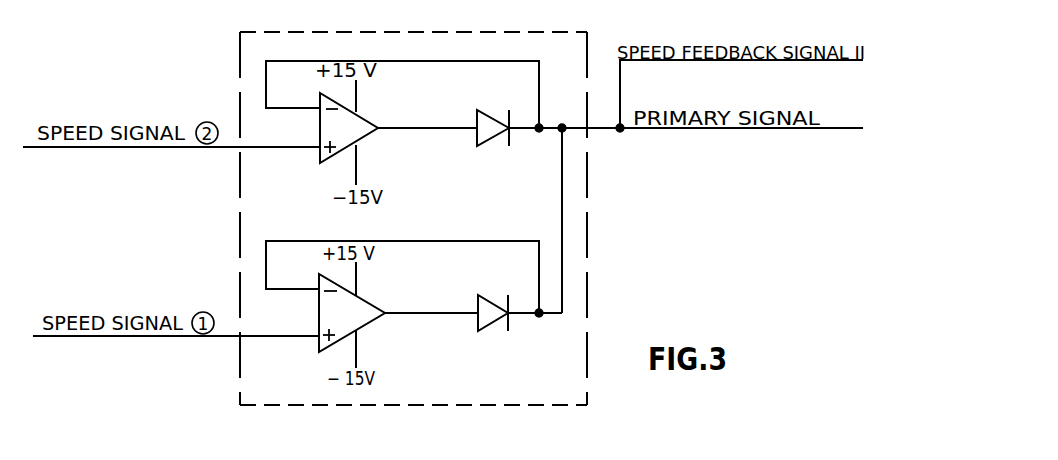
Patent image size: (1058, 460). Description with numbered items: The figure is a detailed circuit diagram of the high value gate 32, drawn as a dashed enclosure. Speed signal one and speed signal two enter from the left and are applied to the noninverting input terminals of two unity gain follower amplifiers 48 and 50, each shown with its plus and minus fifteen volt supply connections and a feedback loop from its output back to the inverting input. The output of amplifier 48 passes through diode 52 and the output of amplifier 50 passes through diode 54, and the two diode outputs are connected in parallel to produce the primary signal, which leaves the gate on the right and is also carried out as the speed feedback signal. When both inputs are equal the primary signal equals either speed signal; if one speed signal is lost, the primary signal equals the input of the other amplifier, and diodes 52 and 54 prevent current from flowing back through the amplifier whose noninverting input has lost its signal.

The high value gate 32 is at (588, 56).
The unity gain follower amplifier 48 is at (372, 305).
The unity gain follower amplifier 50 is at (372, 123).
The diode 52 is at (485, 298).
The diode 54 is at (497, 109).